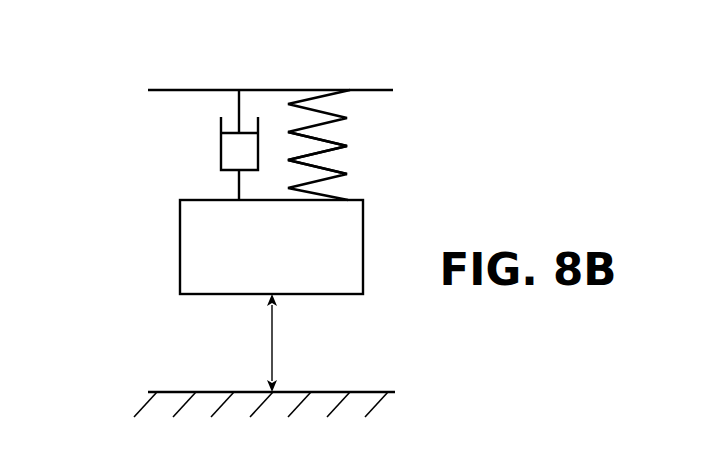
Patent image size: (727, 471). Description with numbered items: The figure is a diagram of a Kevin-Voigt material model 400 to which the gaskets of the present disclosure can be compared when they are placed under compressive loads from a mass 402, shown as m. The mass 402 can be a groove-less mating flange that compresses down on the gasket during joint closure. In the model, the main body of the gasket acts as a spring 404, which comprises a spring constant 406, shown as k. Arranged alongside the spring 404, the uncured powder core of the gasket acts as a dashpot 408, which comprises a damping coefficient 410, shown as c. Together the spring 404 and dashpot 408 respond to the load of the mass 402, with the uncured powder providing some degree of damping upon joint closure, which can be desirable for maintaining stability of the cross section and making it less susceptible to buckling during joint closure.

The Kevin-Voigt material model 400 is at (163, 54).
The mass 402 is at (254, 258).
The spring 404 is at (338, 106).
The spring constant 406 is at (343, 158).
The dashpot 408 is at (220, 140).
The damping coefficient 410 is at (207, 156).